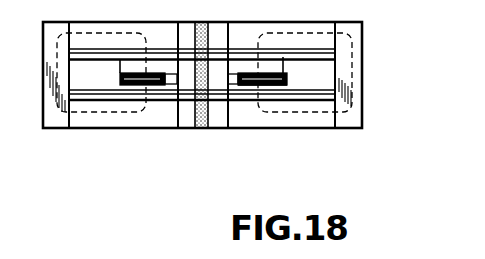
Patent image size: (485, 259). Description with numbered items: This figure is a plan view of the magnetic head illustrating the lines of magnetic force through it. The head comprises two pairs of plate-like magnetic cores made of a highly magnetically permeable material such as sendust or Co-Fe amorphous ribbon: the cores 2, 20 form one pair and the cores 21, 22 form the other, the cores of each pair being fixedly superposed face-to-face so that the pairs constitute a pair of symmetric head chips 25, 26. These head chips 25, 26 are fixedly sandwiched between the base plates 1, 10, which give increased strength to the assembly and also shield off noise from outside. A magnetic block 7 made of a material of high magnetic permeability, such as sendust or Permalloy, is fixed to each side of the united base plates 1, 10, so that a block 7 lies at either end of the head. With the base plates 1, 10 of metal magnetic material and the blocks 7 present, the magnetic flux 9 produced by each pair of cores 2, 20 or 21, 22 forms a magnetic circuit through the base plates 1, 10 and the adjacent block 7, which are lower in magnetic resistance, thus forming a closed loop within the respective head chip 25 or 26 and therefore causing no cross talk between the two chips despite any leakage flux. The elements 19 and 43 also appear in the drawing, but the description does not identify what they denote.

The nonmagnetic base plate 1 is at (283, 25).
The magnetic block 7 is at (52, 47).
The cover plate 19 is at (349, 25).
The magnetic flux 9 is at (88, 113).
The central partition 43 is at (200, 33).
The plate-like magnetic core 21 is at (120, 87).
The plate-like magnetic core 22 is at (160, 87).
The head chip 26 is at (127, 136).
The plate-like magnetic core 2 is at (226, 60).
The plate-like magnetic core 20 is at (248, 86).
The head chip 25 is at (232, 137).
The nonmagnetic base plate 10 is at (262, 95).